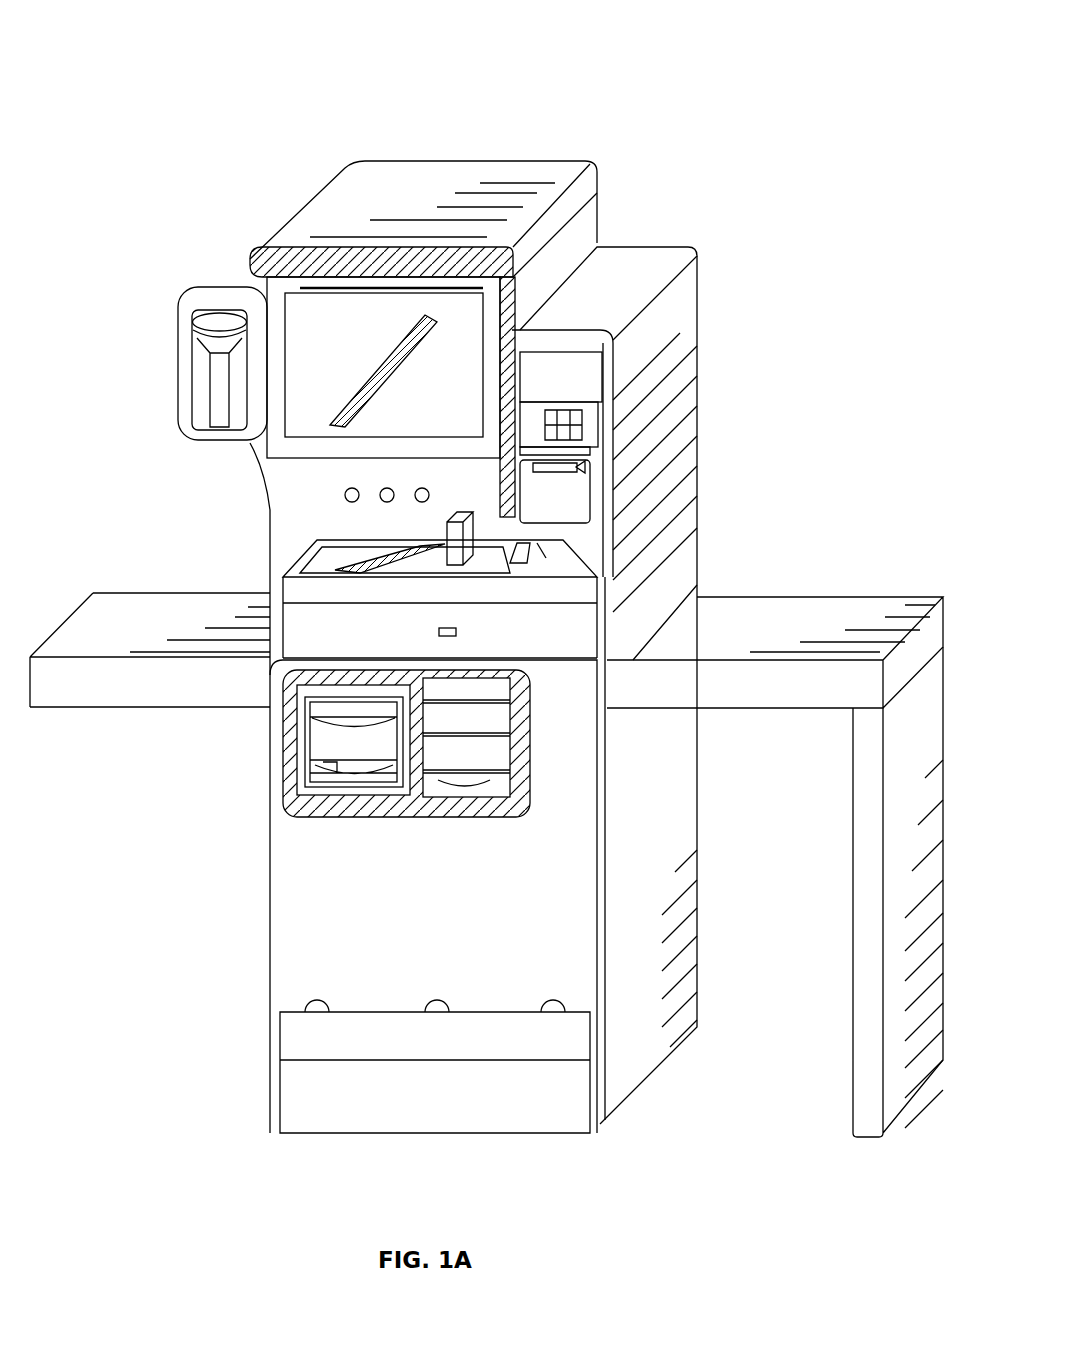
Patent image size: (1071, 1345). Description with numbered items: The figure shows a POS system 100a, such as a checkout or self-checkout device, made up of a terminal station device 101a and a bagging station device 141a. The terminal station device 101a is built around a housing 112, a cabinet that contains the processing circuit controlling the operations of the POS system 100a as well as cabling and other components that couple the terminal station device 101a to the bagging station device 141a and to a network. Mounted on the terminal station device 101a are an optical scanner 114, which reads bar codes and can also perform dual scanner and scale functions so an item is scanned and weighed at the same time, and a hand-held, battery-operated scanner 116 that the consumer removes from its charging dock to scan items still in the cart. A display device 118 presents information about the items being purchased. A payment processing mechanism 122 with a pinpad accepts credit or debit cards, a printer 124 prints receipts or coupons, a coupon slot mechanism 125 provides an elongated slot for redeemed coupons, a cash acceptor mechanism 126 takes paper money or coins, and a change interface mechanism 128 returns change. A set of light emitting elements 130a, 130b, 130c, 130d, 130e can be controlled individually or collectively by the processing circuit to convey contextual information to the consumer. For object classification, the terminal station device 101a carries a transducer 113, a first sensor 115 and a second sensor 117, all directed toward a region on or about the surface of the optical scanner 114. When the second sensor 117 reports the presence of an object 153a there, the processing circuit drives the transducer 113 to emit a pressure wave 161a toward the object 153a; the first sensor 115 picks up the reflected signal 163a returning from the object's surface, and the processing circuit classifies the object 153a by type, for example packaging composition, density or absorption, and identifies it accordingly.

The POS system 100a is at (140, 48).
The terminal station device 101a is at (572, 118).
The housing 112 is at (441, 918).
The transducer 113 is at (350, 488).
The optical scanner 114 is at (300, 560).
The first sensor 115 is at (422, 488).
The scanner 116 is at (207, 387).
The second sensor 117 is at (386, 488).
The display device 118 is at (357, 345).
The payment processing mechanism 122 is at (583, 382).
The printer 124 is at (573, 502).
The coupon slot mechanism 125 is at (543, 553).
The cash acceptor mechanism 126 is at (325, 737).
The change interface mechanism 128 is at (497, 720).
The light emitting element 130a is at (379, 246).
The light emitting element 130b is at (605, 243).
The light emitting element 130c is at (668, 405).
The light emitting element 130d is at (523, 560).
The light emitting element 130e is at (347, 812).
The bagging station device 141a is at (828, 582).
The object 153a is at (433, 507).
The pressure wave 161a is at (412, 530).
The reflected signal 163a is at (463, 493).